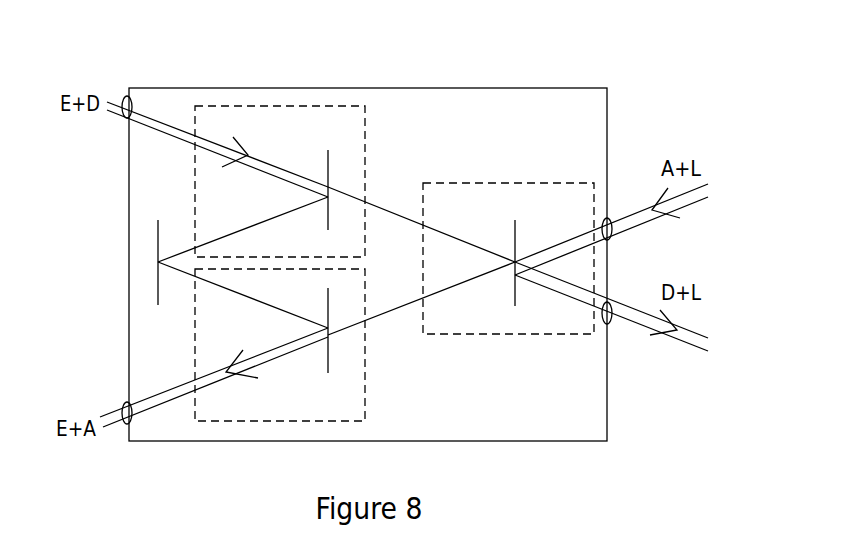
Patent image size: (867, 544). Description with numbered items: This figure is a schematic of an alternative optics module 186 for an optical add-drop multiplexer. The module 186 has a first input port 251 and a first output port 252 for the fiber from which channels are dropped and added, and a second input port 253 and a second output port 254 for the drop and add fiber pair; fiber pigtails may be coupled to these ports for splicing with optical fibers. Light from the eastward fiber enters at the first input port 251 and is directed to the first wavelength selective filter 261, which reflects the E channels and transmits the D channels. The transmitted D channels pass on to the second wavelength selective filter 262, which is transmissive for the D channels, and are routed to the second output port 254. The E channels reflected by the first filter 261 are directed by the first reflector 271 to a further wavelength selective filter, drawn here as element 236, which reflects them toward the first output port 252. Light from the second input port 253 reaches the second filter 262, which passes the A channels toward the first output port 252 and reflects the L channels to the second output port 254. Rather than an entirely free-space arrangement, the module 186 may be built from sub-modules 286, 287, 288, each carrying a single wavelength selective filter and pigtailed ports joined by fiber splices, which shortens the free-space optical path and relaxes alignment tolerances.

The optics module 186 is at (266, 88).
The sub-module 286 is at (342, 106).
The sub-module 287 is at (278, 422).
The sub-module 288 is at (505, 335).
The first reflector 271 is at (156, 230).
The first wavelength selective filter 261 is at (330, 160).
The second dichroic filter 236 is at (333, 345).
The second wavelength selective filter 262 is at (515, 218).
The first input port 251 is at (125, 98).
The first output port 252 is at (124, 402).
The second input port 253 is at (609, 222).
The second output port 254 is at (609, 322).